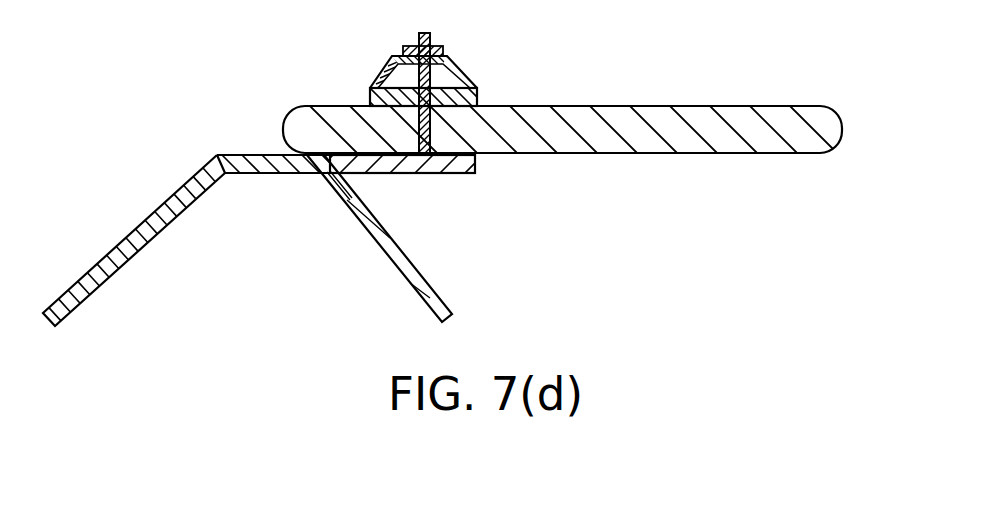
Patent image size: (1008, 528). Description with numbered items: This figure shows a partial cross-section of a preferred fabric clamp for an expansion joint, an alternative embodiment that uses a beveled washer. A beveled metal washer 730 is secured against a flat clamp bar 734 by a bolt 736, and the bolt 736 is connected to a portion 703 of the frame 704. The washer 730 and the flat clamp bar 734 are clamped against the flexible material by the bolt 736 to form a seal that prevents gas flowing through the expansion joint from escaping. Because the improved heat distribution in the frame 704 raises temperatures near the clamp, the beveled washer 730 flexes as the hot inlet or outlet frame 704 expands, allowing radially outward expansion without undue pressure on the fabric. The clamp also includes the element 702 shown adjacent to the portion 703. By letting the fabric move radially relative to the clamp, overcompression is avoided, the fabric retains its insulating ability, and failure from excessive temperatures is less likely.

The plate 702 is at (665, 106).
The portion of frame 703 is at (413, 173).
The frame 704 is at (117, 208).
The beveled metal washer 730 is at (452, 62).
The flat clamp bar 734 is at (478, 100).
The bolt 736 is at (421, 34).